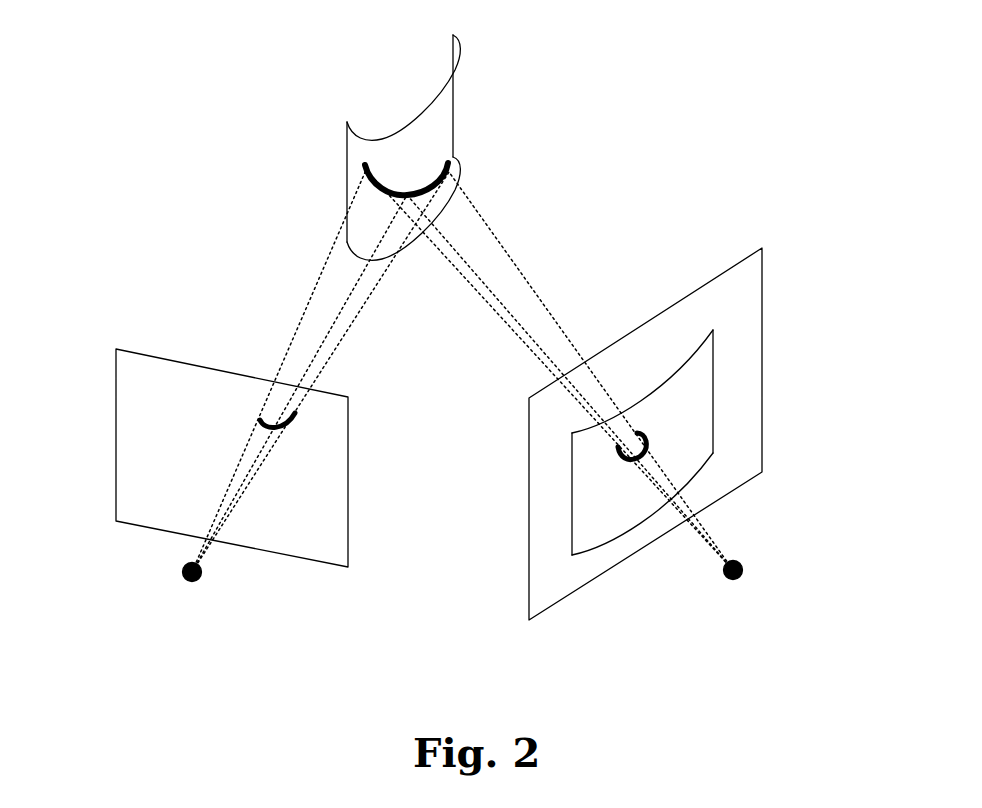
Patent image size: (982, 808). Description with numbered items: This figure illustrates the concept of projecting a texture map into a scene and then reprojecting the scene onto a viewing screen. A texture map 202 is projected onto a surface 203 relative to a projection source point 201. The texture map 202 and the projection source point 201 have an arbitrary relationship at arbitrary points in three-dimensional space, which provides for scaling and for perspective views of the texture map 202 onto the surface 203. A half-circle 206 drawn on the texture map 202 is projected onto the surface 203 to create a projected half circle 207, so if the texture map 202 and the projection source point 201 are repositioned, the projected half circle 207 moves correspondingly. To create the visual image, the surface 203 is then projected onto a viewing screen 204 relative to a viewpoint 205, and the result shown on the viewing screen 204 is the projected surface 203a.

The projection source point 201 is at (193, 610).
The texture map 202 is at (116, 405).
The surface 203 is at (447, 108).
The projected surface 203a is at (600, 510).
The viewing screen 204 is at (763, 331).
The viewpoint 205 is at (737, 597).
The half-circle 206 is at (296, 422).
The projected half circle 207 is at (450, 175).